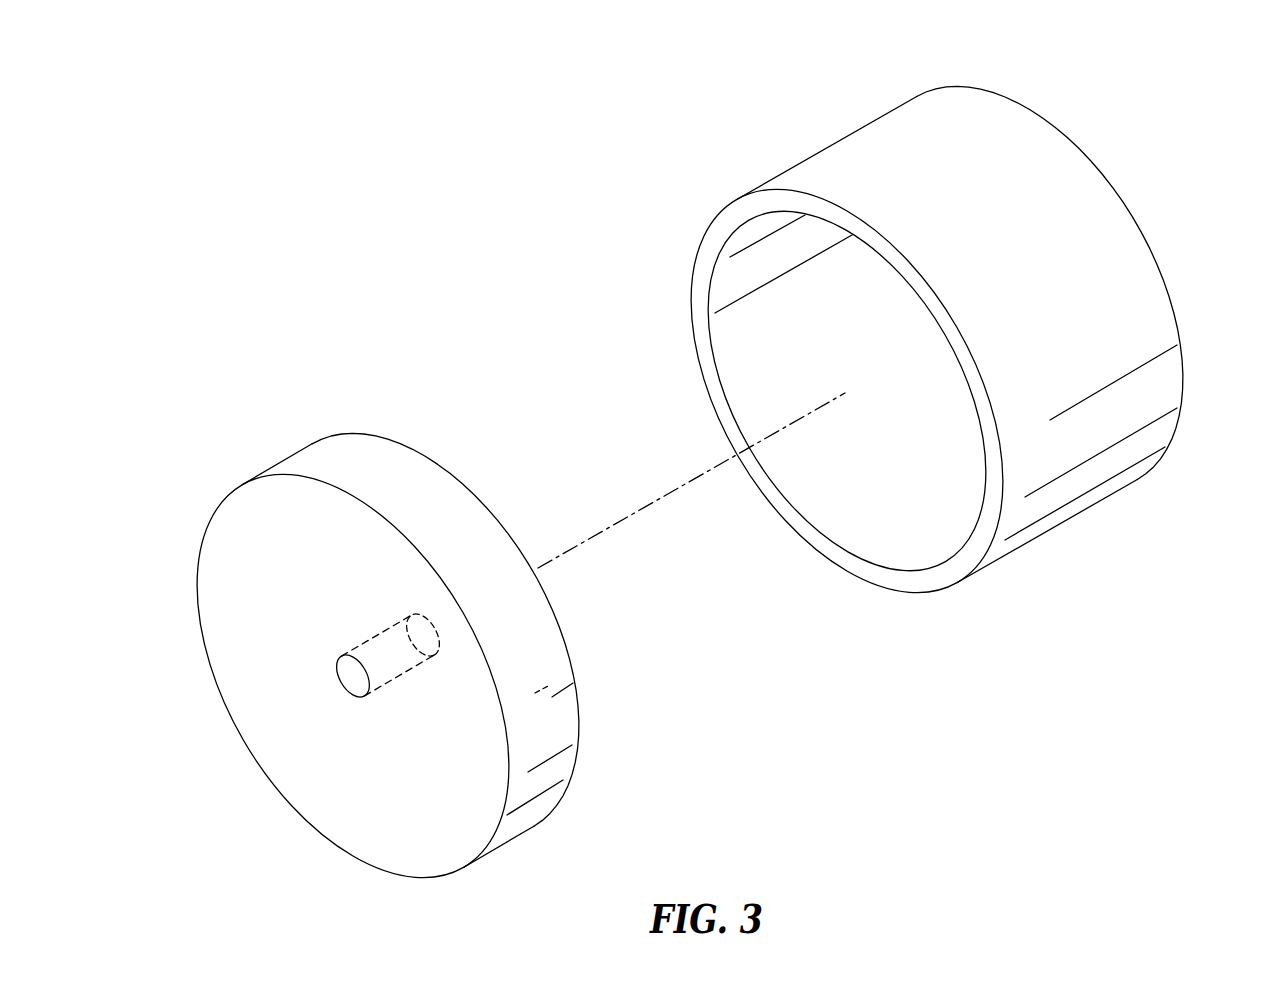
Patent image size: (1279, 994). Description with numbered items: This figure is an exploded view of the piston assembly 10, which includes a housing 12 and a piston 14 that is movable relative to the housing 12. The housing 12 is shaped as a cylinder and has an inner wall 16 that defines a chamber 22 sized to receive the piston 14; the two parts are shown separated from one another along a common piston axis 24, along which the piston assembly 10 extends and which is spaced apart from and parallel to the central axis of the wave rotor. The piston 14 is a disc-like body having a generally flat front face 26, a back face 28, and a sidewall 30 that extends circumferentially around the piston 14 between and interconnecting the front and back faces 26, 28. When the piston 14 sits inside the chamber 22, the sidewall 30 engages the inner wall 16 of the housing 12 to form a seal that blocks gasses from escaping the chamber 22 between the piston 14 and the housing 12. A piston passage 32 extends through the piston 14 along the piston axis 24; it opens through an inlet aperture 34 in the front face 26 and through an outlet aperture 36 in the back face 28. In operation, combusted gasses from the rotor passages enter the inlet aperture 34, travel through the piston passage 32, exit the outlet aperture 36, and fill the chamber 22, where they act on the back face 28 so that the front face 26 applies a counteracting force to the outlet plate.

The piston assembly 10 is at (546, 97).
The housing 12 is at (928, 365).
The piston 14 is at (396, 635).
The inner wall 16 is at (913, 528).
The chamber 22 is at (757, 331).
The piston axis 24 is at (667, 495).
The front face 26 is at (372, 832).
The back face 28 is at (578, 683).
The sidewall 30 is at (445, 486).
The piston passage 32 is at (327, 695).
The inlet aperture 34 is at (318, 657).
The outlet aperture 36 is at (452, 628).